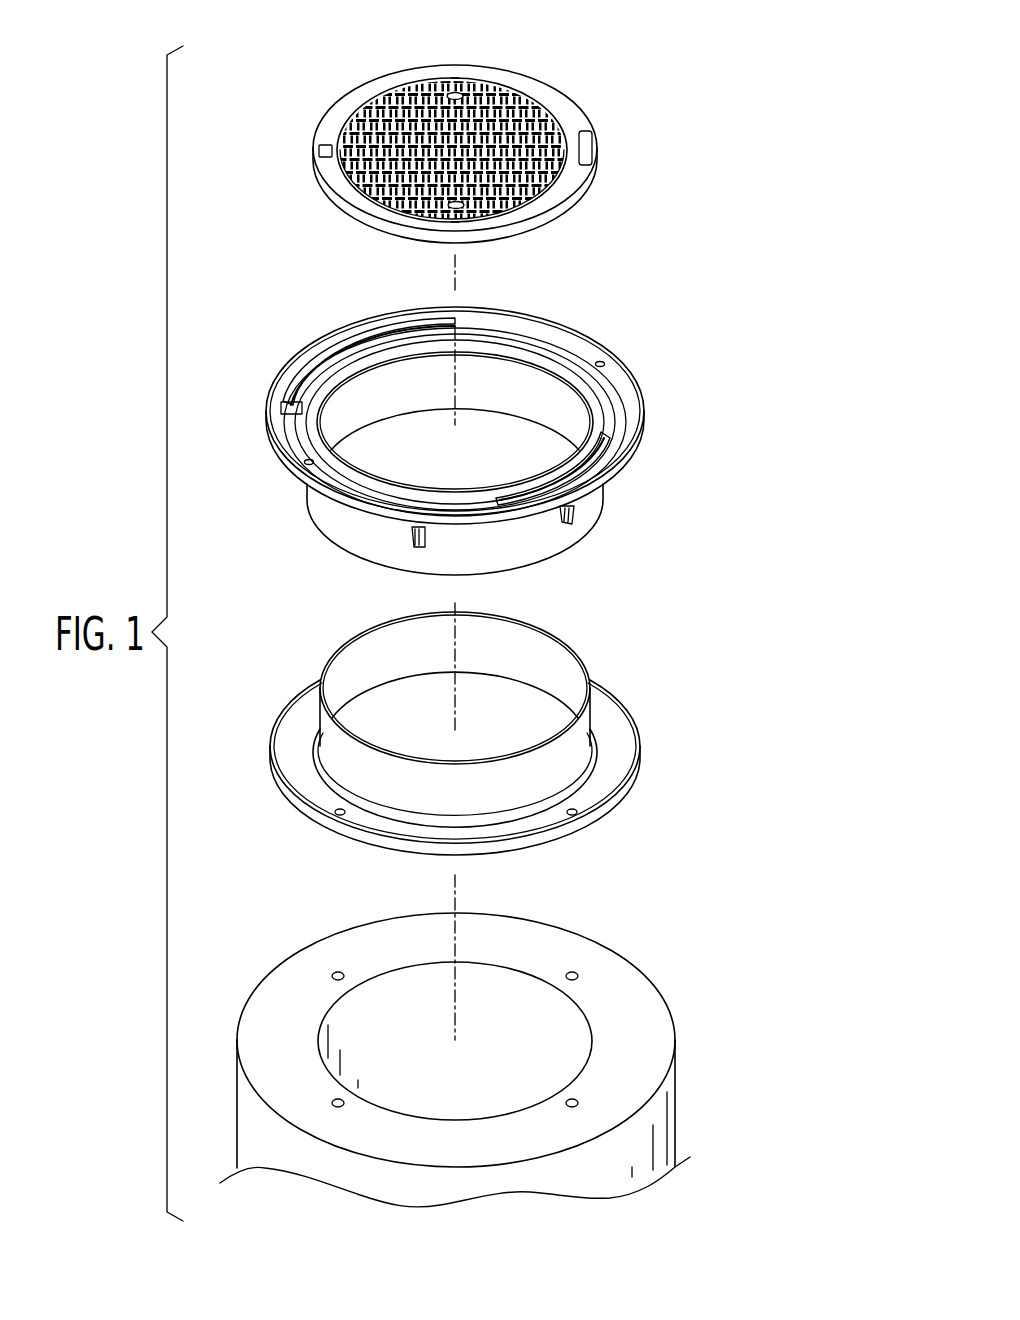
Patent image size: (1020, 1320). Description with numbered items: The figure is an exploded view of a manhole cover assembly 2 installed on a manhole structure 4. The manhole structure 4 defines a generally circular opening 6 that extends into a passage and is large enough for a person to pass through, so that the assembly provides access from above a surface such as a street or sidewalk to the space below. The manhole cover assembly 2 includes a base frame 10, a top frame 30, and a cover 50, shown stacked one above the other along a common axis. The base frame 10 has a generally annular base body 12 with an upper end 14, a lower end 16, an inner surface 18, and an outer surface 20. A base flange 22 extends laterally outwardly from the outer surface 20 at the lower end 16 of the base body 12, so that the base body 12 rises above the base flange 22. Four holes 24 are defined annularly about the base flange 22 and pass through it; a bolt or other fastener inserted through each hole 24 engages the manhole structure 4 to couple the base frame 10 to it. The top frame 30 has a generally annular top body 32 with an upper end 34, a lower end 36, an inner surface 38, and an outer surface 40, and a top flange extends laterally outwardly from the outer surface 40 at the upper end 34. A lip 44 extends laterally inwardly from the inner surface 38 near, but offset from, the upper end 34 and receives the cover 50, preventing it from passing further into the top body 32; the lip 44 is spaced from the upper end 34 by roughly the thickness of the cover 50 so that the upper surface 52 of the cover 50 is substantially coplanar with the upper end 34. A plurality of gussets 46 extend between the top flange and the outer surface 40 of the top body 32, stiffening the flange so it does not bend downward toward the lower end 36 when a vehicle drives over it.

The manhole cover assembly 2 is at (262, 112).
The manhole structure 4 is at (662, 1113).
The opening 6 is at (592, 1042).
The base frame 10 is at (641, 681).
The base body 12 is at (563, 768).
The upper end 14 is at (505, 615).
The lower end 16 is at (515, 675).
The inner surface 18 is at (555, 655).
The outer surface 20 is at (582, 735).
The base flange 22 is at (291, 764).
The holes 24 is at (334, 813).
The top frame 30 is at (652, 396).
The top body 32 is at (537, 538).
The upper end 34 is at (525, 345).
The lower end 36 is at (487, 410).
The inner surface 38 is at (547, 396).
The outer surface 40 is at (590, 500).
The lip 44 is at (318, 412).
The gussets 46 is at (566, 510).
The cover 50 is at (494, 102).
The upper surface 52 is at (567, 103).